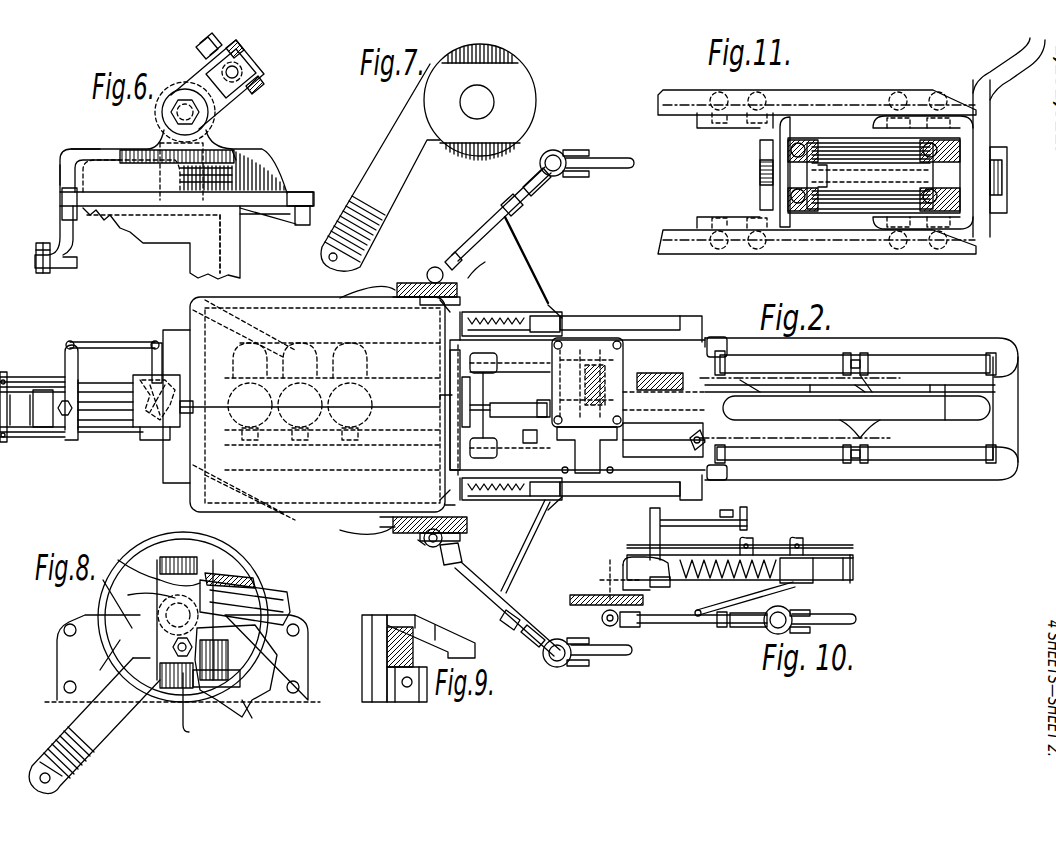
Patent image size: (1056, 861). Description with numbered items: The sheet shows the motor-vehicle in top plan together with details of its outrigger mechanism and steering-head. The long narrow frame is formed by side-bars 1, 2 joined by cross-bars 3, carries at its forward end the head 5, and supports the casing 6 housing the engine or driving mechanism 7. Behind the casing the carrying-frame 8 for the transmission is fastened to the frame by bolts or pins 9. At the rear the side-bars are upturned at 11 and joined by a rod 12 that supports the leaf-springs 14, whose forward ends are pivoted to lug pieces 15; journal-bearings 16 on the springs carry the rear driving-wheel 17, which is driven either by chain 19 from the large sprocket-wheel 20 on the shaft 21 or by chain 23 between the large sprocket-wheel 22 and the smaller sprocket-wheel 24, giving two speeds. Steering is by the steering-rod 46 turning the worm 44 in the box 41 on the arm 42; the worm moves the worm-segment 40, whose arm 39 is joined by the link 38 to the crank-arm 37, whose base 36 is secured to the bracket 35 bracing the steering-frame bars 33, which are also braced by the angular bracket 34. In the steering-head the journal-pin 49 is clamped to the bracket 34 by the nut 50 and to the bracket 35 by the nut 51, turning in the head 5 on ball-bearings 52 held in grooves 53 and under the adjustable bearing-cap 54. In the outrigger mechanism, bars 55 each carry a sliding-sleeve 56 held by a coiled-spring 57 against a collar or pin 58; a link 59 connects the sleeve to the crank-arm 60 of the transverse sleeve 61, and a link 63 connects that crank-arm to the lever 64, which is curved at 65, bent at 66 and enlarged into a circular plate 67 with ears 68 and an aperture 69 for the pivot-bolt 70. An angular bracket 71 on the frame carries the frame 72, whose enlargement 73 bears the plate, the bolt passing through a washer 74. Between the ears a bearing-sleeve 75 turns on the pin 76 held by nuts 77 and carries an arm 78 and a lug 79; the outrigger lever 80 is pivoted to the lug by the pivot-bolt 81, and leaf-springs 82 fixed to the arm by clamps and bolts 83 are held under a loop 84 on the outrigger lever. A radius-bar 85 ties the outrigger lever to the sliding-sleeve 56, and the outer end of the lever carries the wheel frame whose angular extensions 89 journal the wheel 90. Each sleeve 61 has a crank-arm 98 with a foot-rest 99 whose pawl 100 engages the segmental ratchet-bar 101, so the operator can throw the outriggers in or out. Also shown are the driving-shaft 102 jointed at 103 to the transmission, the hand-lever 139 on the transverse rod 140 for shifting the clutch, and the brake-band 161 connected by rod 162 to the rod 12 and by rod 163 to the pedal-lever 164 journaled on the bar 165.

In FIG. 2, the side-bar 1 is at (878, 345).
In FIG. 2, the side-bar 2 is at (900, 482).
In FIG. 10, the side-bar 2 is at (855, 548).
In FIG. 2, the cross-bars 3 is at (195, 315).
In FIG. 11, the head 5 is at (845, 207).
In FIG. 6, the casing 6 is at (147, 232).
In FIG. 2, the motor 7 is at (332, 406).
In FIG. 2, the carrying-frame 8 is at (598, 345).
In FIG. 2, the bolts or pins 9 is at (560, 345).
In FIG. 2, the upturned rear ends 11 is at (998, 372).
In FIG. 2, the rod 12 is at (993, 440).
In FIG. 2, the leaf-springs 14 is at (960, 364).
In FIG. 2, the lug pieces 15 is at (722, 345).
In FIG. 2, the journal-bearings 16 is at (855, 355).
In FIG. 2, the rear driving-wheel 17 is at (928, 400).
In FIG. 2, the chain 19 is at (778, 448).
In FIG. 2, the large sprocket-wheel 20 is at (625, 450).
In FIG. 2, the shaft 21 is at (672, 455).
In FIG. 2, the large sprocket-wheel 22 is at (896, 378).
In FIG. 2, the chain 23 is at (855, 365).
In FIG. 2, the smaller sprocket-wheel 24 is at (655, 380).
In FIG. 11, the steering-frame bars 33 is at (678, 118).
In FIG. 11, the angular bracket 34 is at (778, 136).
In FIG. 11, the bracket 35 is at (925, 118).
In FIG. 11, the base 36 is at (992, 117).
In FIG. 2, the base 36 is at (75, 432).
In FIG. 11, the crank-arm 37 is at (1022, 50).
In FIG. 2, the crank-arm 37 is at (66, 362).
In FIG. 2, the link 38 is at (100, 338).
In FIG. 2, the arm 39 is at (152, 362).
In FIG. 2, the worm-segment 40 is at (150, 388).
In FIG. 2, the box 41 is at (160, 378).
In FIG. 2, the arm 42 is at (125, 412).
In FIG. 2, the worm 44 is at (160, 418).
In FIG. 2, the steering-rod 46 is at (318, 407).
In FIG. 11, the journal-pin 49 is at (805, 205).
In FIG. 2, the journal-pin 49 is at (62, 412).
In FIG. 11, the nut 50 is at (768, 197).
In FIG. 11, the nut 51 is at (1002, 213).
In FIG. 2, the nut 51 is at (68, 428).
In FIG. 11, the ball-bearings 52 is at (802, 147).
In FIG. 11, the groove 53 is at (795, 152).
In FIG. 11, the bearing-cap 54 is at (990, 138).
In FIG. 2, the bars 55 is at (620, 320).
In FIG. 10, the bars 55 is at (845, 582).
In FIG. 2, the sliding-sleeve 56 is at (558, 318).
In FIG. 10, the sliding-sleeve 56 is at (800, 575).
In FIG. 2, the coiled-spring 57 is at (522, 510).
In FIG. 2, the collar or pin 58 is at (500, 320).
In FIG. 2, the link 59 is at (520, 330).
In FIG. 10, the link 59 is at (775, 560).
In FIG. 2, the crank-arm 60 is at (490, 315).
In FIG. 10, the crank-arm 60 is at (668, 587).
In FIG. 2, the transverse sleeve 61 is at (452, 395).
In FIG. 6, the link 63 is at (62, 270).
In FIG. 2, the link 63 is at (482, 278).
In FIG. 10, the link 63 is at (640, 558).
In FIG. 6, the lever 64 is at (85, 149).
In FIG. 7, the lever 64 is at (390, 175).
In FIG. 2, the lever 64 is at (400, 284).
In FIG. 8, the lever 64 is at (90, 720).
In FIG. 10, the lever 64 is at (610, 580).
In FIG. 6, the outward curve 65 is at (73, 241).
In FIG. 7, the outward curve 65 is at (352, 240).
In FIG. 2, the outward curve 65 is at (365, 297).
In FIG. 8, the outward curve 65 is at (48, 755).
In FIG. 6, the right-angle bend 66 is at (61, 156).
In FIG. 7, the right-angle bend 66 is at (370, 217).
In FIG. 2, the right-angle bend 66 is at (397, 290).
In FIG. 8, the right-angle bend 66 is at (65, 728).
In FIG. 6, the circular plate 67 is at (150, 150).
In FIG. 7, the circular plate 67 is at (525, 85).
In FIG. 6, the ears 68 is at (218, 133).
In FIG. 7, the ears 68 is at (505, 55).
In FIG. 2, the ears 68 is at (430, 270).
In FIG. 8, the ears 68 is at (185, 565).
In FIG. 10, the ears 68 is at (604, 627).
In FIG. 7, the aperture 69 is at (482, 105).
In FIG. 8, the aperture 69 is at (255, 628).
In FIG. 6, the pivot-bolt 70 is at (238, 156).
In FIG. 2, the pivot-bolt 70 is at (420, 535).
In FIG. 8, the pivot-bolt 70 is at (130, 625).
In FIG. 6, the angular bracket 71 is at (241, 250).
In FIG. 2, the angular bracket 71 is at (454, 506).
In FIG. 6, the frame 72 is at (60, 198).
In FIG. 2, the frame 72 is at (386, 411).
In FIG. 8, the frame 72 is at (306, 656).
In FIG. 6, the enlargement 73 is at (103, 171).
In FIG. 2, the enlargement 73 is at (480, 262).
In FIG. 8, the enlargement 73 is at (225, 560).
In FIG. 10, the enlargement 73 is at (606, 611).
In FIG. 6, the washer 74 is at (132, 180).
In FIG. 2, the washer 74 is at (390, 572).
In FIG. 8, the bearing-sleeve 75 is at (165, 607).
In FIG. 9, the bearing-sleeve 75 is at (372, 702).
In FIG. 6, the pin 76 is at (178, 104).
In FIG. 2, the pin 76 is at (555, 150).
In FIG. 8, the pin 76 is at (170, 560).
In FIG. 10, the pin 76 is at (770, 630).
In FIG. 8, the nuts 77 is at (185, 727).
In FIG. 8, the arm 78 is at (140, 580).
In FIG. 9, the arm 78 is at (450, 642).
In FIG. 8, the lug 79 is at (223, 668).
In FIG. 9, the lug 79 is at (418, 700).
In FIG. 6, the outrigger lever 80 is at (222, 48).
In FIG. 2, the outrigger lever 80 is at (540, 632).
In FIG. 8, the outrigger lever 80 is at (242, 716).
In FIG. 10, the outrigger lever 80 is at (748, 628).
In FIG. 6, the pivot-bolt 81 is at (203, 48).
In FIG. 8, the pivot-bolt 81 is at (172, 648).
In FIG. 6, the leaf-springs 82 is at (246, 60).
In FIG. 2, the leaf-springs 82 is at (492, 230).
In FIG. 8, the leaf-springs 82 is at (291, 602).
In FIG. 10, the leaf-springs 82 is at (670, 625).
In FIG. 6, the clamps and bolts 83 is at (250, 78).
In FIG. 2, the clamps and bolts 83 is at (450, 256).
In FIG. 8, the clamps and bolts 83 is at (255, 585).
In FIG. 10, the clamps and bolts 83 is at (630, 619).
In FIG. 2, the loop 84 is at (517, 211).
In FIG. 10, the loop 84 is at (720, 628).
In FIG. 2, the radius-bar 85 is at (531, 250).
In FIG. 10, the radius-bar 85 is at (730, 605).
In FIG. 2, the angular extensions 89 is at (585, 152).
In FIG. 10, the angular extensions 89 is at (809, 631).
In FIG. 2, the wheel 90 is at (612, 168).
In FIG. 10, the wheel 90 is at (852, 622).
In FIG. 10, the crank-arm 98 is at (698, 534).
In FIG. 2, the foot-rest 99 is at (510, 404).
In FIG. 10, the foot-rest 99 is at (748, 518).
In FIG. 10, the pawl 100 is at (733, 502).
In FIG. 2, the segmental ratchet-bar 101 is at (460, 440).
In FIG. 2, the driving-shaft 102 is at (508, 401).
In FIG. 2, the pivotal joint 103 is at (540, 402).
In FIG. 2, the hand-lever 139 is at (587, 450).
In FIG. 2, the transverse rod 140 is at (525, 448).
In FIG. 2, the brake-band 161 is at (882, 397).
In FIG. 2, the rod 162 is at (961, 402).
In FIG. 2, the rod 163 is at (856, 408).
In FIG. 2, the pedal-lever 164 is at (462, 380).
In FIG. 2, the bar 165 is at (450, 360).